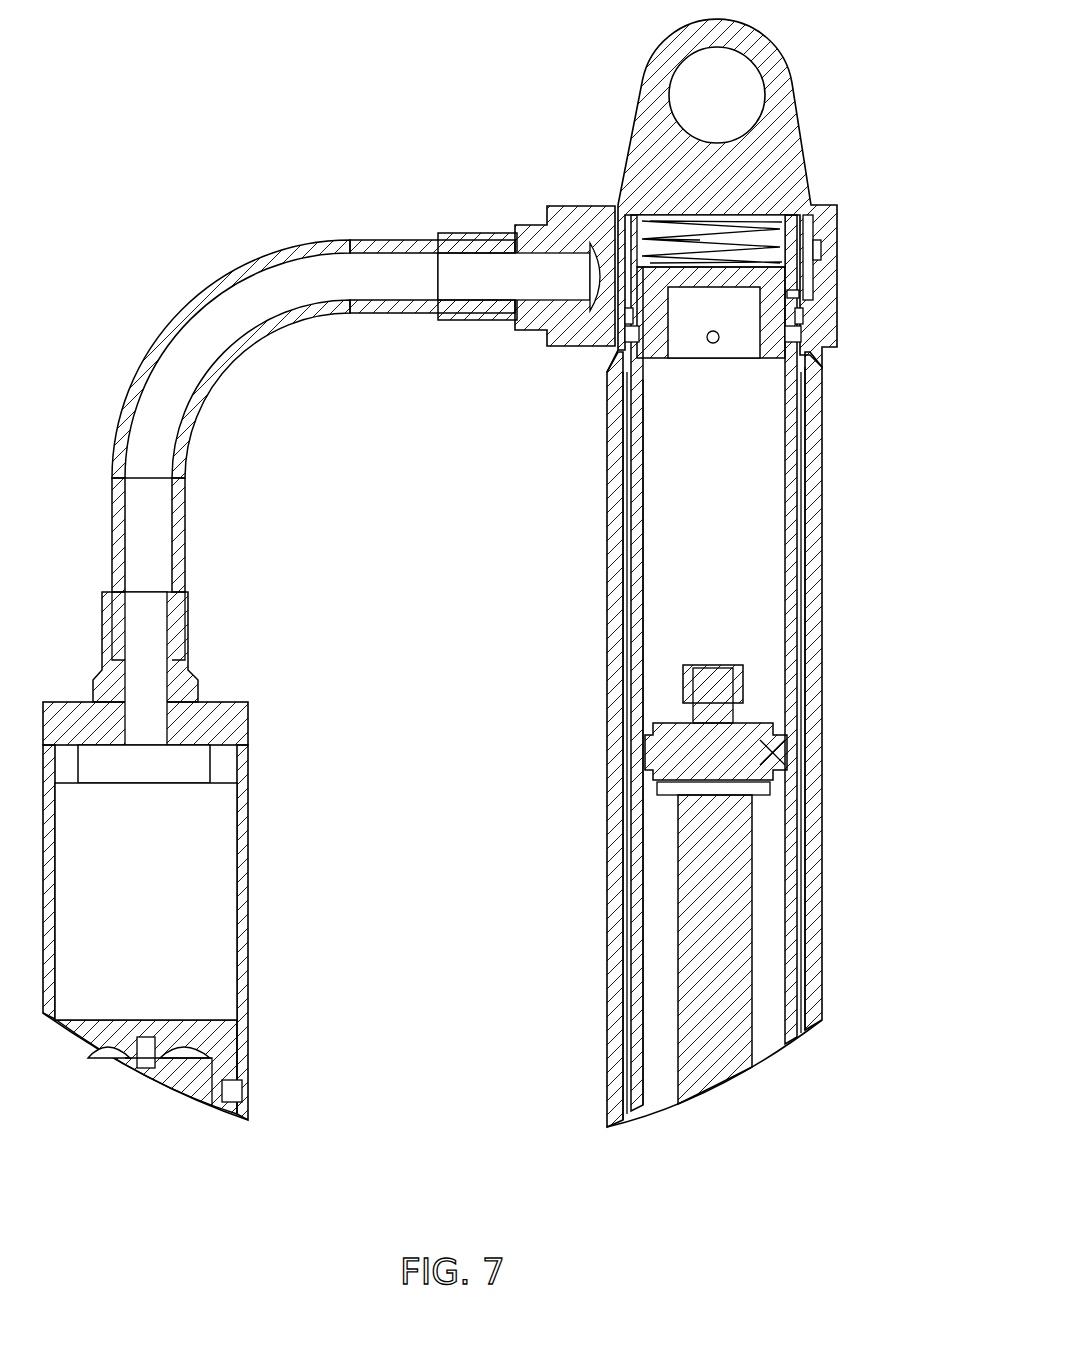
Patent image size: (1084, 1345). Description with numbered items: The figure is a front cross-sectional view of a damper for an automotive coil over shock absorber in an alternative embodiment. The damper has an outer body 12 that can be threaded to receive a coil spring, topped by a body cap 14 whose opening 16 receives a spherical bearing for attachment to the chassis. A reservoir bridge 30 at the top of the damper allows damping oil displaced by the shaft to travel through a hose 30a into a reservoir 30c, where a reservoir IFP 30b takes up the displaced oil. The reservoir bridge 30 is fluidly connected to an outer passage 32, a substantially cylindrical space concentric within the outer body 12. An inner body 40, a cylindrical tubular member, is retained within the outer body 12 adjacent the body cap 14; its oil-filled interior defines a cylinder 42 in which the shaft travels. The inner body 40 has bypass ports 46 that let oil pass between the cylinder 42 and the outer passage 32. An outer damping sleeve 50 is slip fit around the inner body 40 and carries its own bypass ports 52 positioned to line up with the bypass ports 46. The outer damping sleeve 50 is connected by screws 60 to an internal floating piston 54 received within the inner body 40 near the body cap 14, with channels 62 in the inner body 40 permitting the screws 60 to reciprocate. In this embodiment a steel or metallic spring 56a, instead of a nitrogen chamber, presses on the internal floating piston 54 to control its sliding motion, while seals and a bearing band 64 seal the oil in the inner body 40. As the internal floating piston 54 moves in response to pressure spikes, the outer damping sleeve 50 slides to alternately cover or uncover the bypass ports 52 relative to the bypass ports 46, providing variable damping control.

The outer body 12 is at (820, 522).
The body cap 14 is at (795, 140).
The opening 16 is at (717, 82).
The reservoir bridge 30 is at (567, 224).
The hose 30a is at (178, 556).
The reservoir IFP 30b is at (185, 770).
The reservoir 30c is at (243, 912).
The outer passage 32 is at (626, 458).
The inner body 40 is at (788, 450).
The cylinder 42 is at (727, 580).
The bypass ports 46 is at (643, 512).
The outer damping sleeve 50 is at (793, 622).
The bypass ports 52 is at (635, 549).
The internal floating piston 54 is at (767, 276).
The steel/metallic spring 56a is at (767, 222).
The screws 60 is at (793, 343).
The channels 62 is at (799, 293).
The bearing band 64 is at (788, 315).